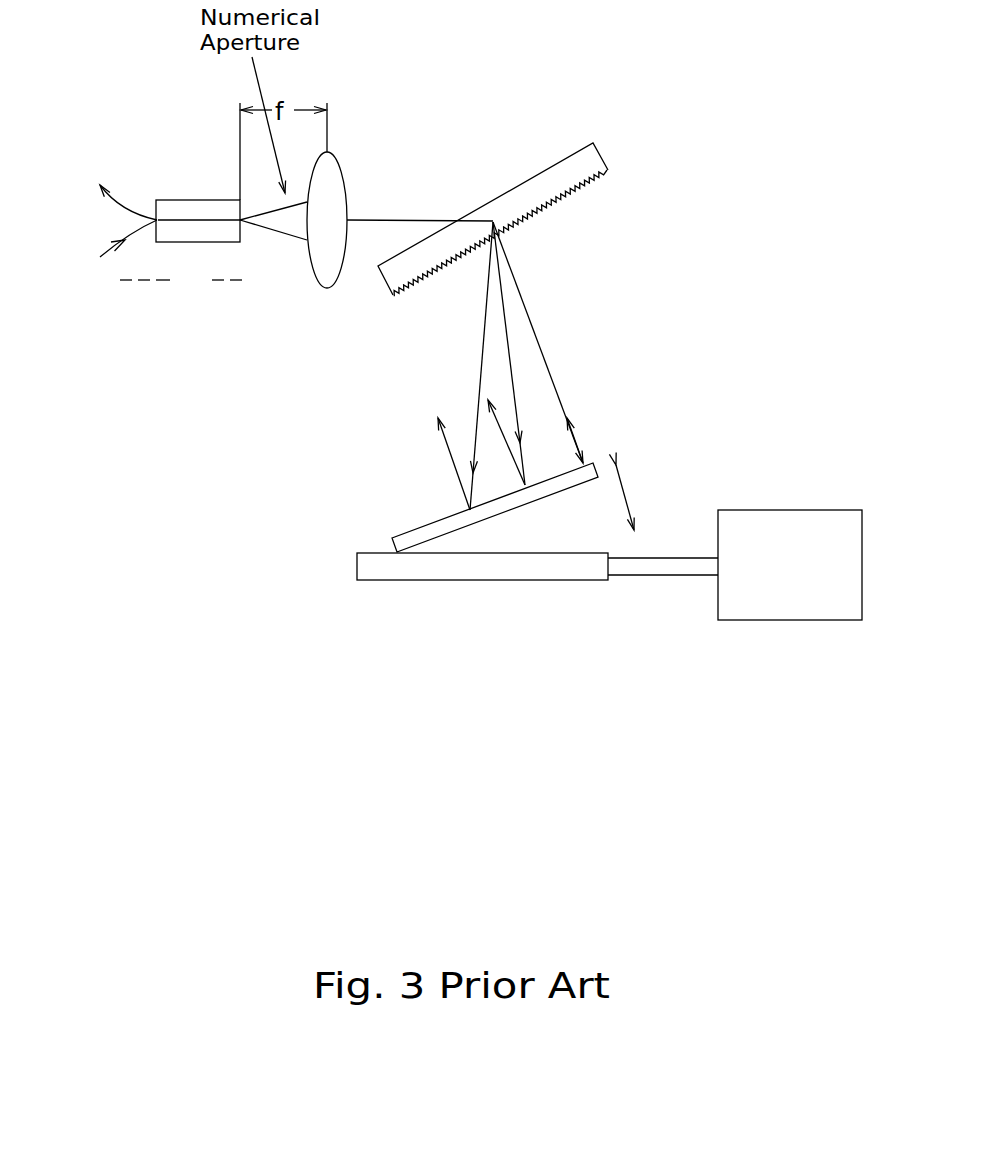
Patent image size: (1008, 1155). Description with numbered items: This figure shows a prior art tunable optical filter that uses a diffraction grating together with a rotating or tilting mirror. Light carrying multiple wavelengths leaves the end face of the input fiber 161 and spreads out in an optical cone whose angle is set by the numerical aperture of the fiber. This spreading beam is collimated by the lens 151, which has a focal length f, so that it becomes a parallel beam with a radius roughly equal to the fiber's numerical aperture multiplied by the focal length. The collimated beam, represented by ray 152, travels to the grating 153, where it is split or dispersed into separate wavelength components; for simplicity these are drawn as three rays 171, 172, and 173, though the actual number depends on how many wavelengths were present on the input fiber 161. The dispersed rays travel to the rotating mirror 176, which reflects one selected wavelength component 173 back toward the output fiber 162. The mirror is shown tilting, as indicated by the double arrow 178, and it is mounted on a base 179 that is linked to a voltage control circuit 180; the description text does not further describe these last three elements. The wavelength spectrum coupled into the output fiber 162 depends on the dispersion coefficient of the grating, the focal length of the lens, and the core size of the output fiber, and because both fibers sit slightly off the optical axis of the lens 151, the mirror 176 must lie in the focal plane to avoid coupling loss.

The lens 151 is at (343, 160).
The ray 152 is at (370, 217).
The grating 153 is at (603, 155).
The input fiber 161 is at (159, 247).
The output fiber 162 is at (110, 188).
The ray 171 is at (482, 338).
The ray 172 is at (517, 398).
The dispersed wavelength component 173 is at (540, 337).
The rotating mirror 176 is at (415, 523).
The mirror tilt motion 178 is at (642, 492).
The actuator base 179 is at (487, 583).
The voltage control circuit 180 is at (790, 505).